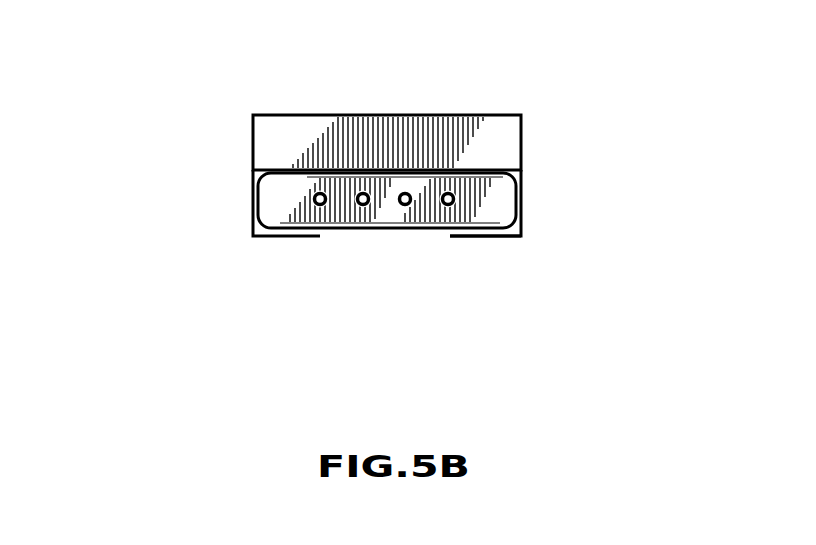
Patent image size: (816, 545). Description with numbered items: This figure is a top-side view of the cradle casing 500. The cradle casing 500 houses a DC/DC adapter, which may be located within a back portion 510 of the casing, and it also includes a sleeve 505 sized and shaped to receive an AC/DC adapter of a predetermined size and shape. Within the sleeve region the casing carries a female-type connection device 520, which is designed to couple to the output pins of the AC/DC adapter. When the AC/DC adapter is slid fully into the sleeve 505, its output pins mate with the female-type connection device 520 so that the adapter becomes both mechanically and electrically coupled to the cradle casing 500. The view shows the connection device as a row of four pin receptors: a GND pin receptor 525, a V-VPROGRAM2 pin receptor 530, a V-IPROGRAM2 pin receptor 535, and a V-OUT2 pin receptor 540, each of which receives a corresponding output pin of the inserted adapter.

The cradle casing 500 is at (522, 195).
The sleeve 505 is at (505, 237).
The back portion 510 is at (507, 132).
The female-type connection device 520 is at (273, 180).
The GND pin receptor 525 is at (313, 198).
The V_VPROGRAM2 pin receptor 530 is at (363, 206).
The V_IPROGRAM2 pin receptor 535 is at (406, 192).
The V_OUT2 pin receptor 540 is at (448, 207).